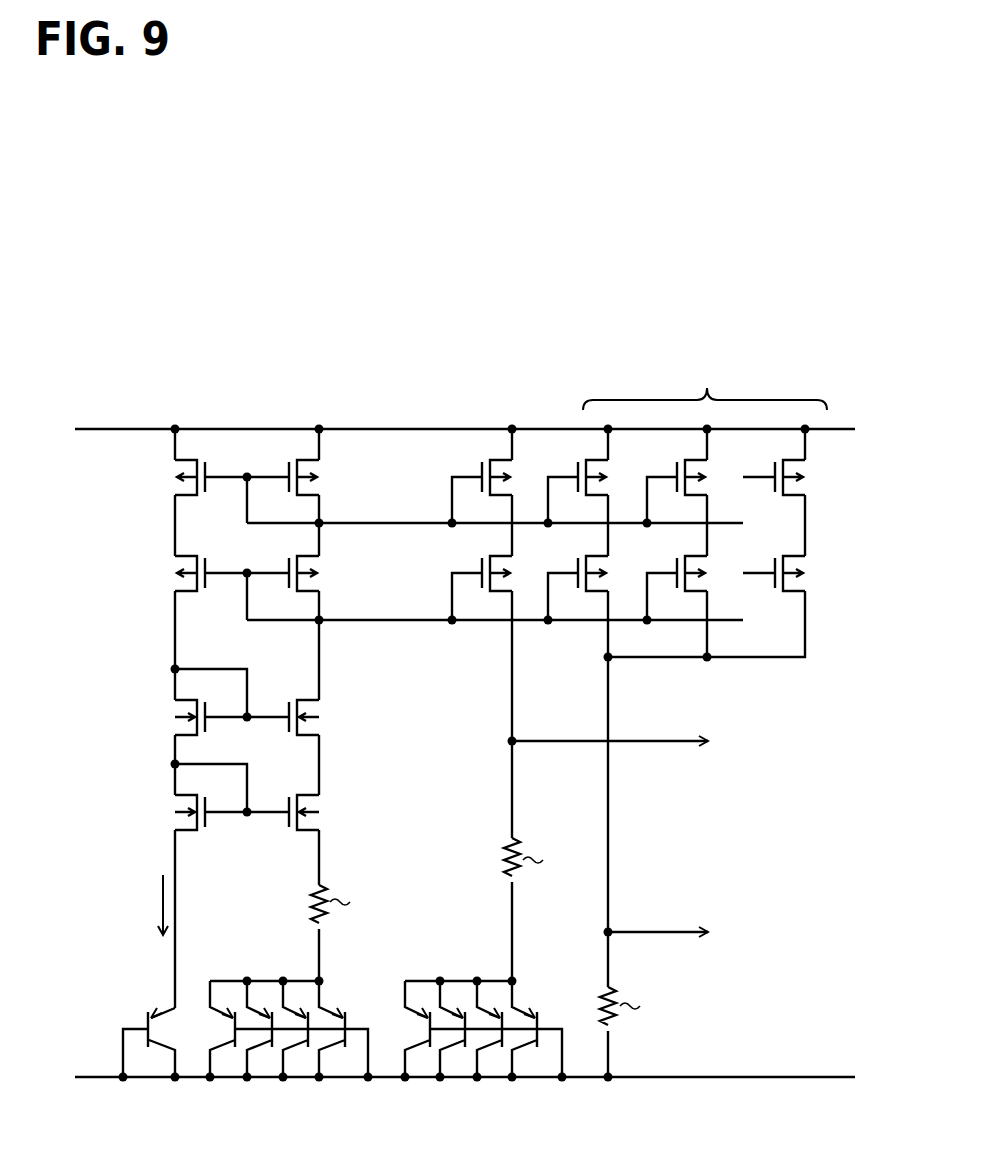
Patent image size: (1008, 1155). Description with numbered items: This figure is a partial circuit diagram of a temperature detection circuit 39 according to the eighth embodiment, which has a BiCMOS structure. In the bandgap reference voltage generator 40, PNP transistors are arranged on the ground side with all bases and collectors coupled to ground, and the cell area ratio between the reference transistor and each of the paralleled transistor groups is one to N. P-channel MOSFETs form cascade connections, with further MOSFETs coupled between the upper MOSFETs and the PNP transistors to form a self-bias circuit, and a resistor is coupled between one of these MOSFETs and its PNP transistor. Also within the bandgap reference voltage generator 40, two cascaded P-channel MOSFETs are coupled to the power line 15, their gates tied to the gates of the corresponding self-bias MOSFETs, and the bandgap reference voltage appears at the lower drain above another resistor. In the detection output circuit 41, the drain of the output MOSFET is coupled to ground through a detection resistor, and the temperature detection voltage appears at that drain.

The power line 15 is at (298, 428).
The temperature detection circuit 39 is at (481, 385).
The VBG generator 40 is at (424, 420).
The detection output circuit 41 is at (818, 527).